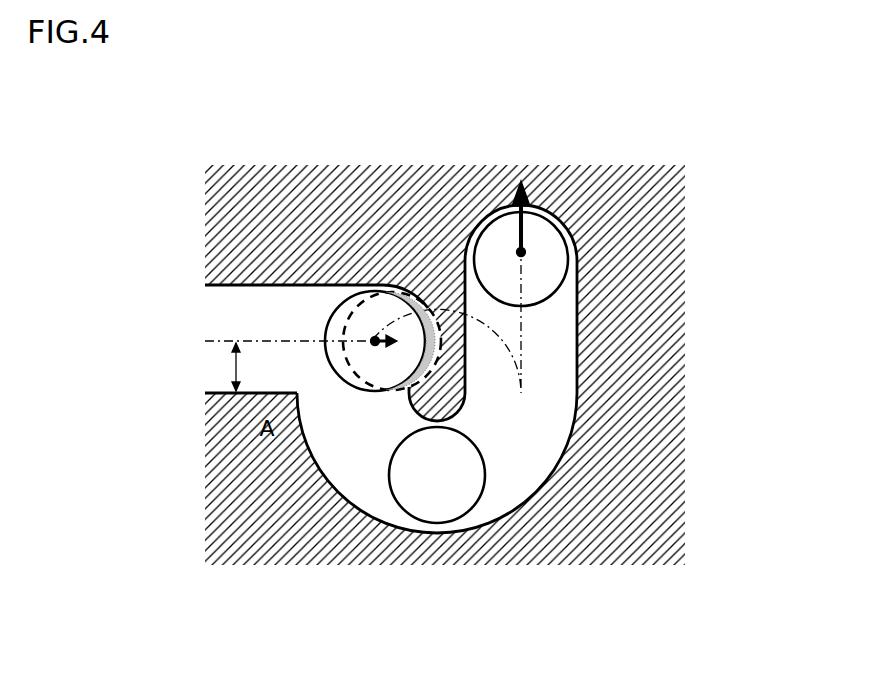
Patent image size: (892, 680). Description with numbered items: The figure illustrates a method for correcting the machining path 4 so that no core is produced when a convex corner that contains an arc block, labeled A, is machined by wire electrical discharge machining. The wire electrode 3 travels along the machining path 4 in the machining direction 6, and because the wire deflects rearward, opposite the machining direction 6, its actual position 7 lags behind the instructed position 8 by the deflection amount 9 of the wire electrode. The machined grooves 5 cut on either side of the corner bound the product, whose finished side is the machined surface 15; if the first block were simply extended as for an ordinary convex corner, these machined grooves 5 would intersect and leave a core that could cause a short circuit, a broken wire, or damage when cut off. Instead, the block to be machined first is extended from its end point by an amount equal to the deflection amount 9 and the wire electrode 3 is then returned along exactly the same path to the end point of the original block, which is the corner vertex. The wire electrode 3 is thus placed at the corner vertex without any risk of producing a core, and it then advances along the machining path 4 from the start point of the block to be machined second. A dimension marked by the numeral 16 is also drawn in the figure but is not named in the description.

The wire electrode 3 is at (407, 513).
The machining path 4 is at (522, 363).
The machined grooves 5 is at (558, 332).
The machining direction 6 is at (523, 252).
The actual position of the wire electrode 7 is at (338, 306).
The instructed position of the wire electrode 8 is at (421, 300).
The deflection amount of the wire electrode 9 is at (374, 337).
The machined surface 15 is at (528, 493).
The gap 16 is at (232, 368).